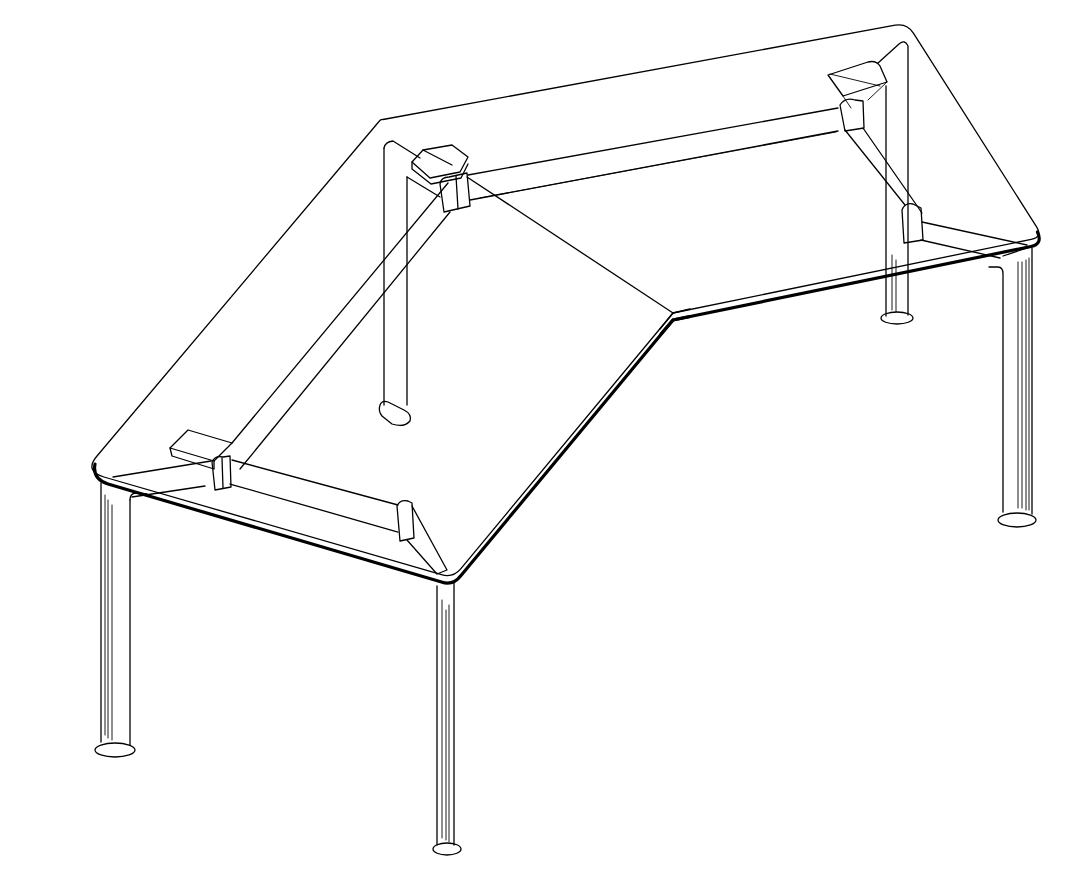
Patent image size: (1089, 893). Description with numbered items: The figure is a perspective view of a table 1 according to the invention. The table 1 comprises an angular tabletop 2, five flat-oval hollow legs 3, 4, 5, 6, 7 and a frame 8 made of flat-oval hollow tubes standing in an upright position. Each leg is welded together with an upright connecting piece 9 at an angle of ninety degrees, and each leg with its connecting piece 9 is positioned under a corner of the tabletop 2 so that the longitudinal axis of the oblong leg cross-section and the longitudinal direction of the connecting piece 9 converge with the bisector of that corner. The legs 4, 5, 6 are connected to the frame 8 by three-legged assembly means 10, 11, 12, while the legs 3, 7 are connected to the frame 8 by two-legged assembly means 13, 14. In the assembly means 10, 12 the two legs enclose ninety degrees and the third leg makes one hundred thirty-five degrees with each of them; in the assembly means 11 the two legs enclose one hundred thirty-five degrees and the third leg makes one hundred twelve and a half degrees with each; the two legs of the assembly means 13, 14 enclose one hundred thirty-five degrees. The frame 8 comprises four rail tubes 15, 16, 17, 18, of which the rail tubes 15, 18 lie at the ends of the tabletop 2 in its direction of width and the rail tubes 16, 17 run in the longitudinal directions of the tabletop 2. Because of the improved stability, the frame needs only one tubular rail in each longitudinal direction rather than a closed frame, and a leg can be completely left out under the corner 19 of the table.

The table 1 is at (186, 236).
The tabletop 2 is at (567, 426).
The leg 3 is at (455, 689).
The leg 4 is at (130, 631).
The leg 5 is at (405, 328).
The leg 6 is at (909, 145).
The leg 7 is at (1032, 439).
The frame 8 is at (614, 122).
The connecting piece 9 is at (424, 156).
The three-legged assembly means 10 is at (214, 480).
The three-legged assembly means 11 is at (467, 201).
The three-legged assembly means 12 is at (856, 115).
The two-legged assembly means 13 is at (415, 507).
The two-legged assembly means 14 is at (910, 225).
The rail tube 15 is at (353, 492).
The rail tube 16 is at (287, 410).
The rail tube 17 is at (665, 164).
The rail tube 18 is at (873, 190).
The corner 19 is at (676, 318).